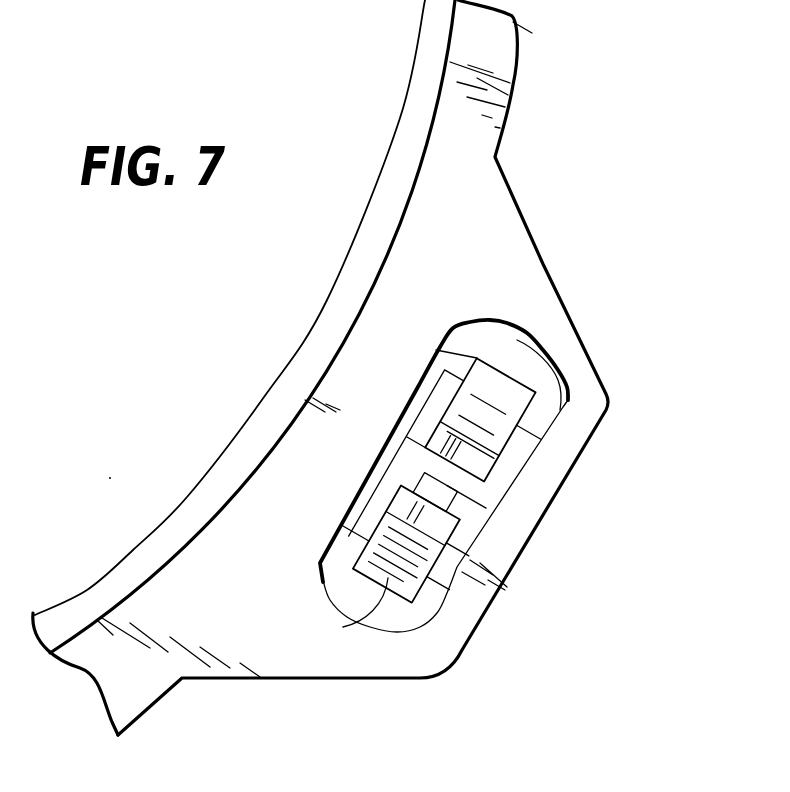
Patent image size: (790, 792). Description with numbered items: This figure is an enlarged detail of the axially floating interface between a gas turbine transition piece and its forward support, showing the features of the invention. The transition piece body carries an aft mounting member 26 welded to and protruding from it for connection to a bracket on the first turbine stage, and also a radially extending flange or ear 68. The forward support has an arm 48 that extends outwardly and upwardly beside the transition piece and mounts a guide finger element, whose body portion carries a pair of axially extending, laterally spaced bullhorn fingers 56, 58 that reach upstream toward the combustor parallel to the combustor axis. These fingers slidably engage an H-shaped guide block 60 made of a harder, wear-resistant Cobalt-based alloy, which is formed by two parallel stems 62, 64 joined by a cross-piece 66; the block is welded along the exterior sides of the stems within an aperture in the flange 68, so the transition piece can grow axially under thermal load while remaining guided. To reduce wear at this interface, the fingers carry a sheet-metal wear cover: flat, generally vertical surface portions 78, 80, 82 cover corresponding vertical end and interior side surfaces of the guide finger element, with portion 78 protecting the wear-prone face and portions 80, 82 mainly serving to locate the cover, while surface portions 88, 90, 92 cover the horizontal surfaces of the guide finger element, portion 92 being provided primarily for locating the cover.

The aft mounting member 26 is at (497, 527).
The arm 48 is at (397, 458).
The bullhorn finger 56 is at (515, 487).
The bullhorn finger 58 is at (505, 588).
The H-shaped guide block 60 is at (397, 462).
The stem 62 is at (518, 458).
The stem 64 is at (418, 413).
The cross-piece 66 is at (553, 390).
The flange 68 is at (568, 326).
The vertical surface portion 78 is at (412, 485).
The vertical surface portion 80 is at (443, 350).
The vertical surface portion 82 is at (365, 520).
The surface portion 88 is at (503, 373).
The surface portion 90 is at (432, 492).
The surface portion 92 is at (343, 627).